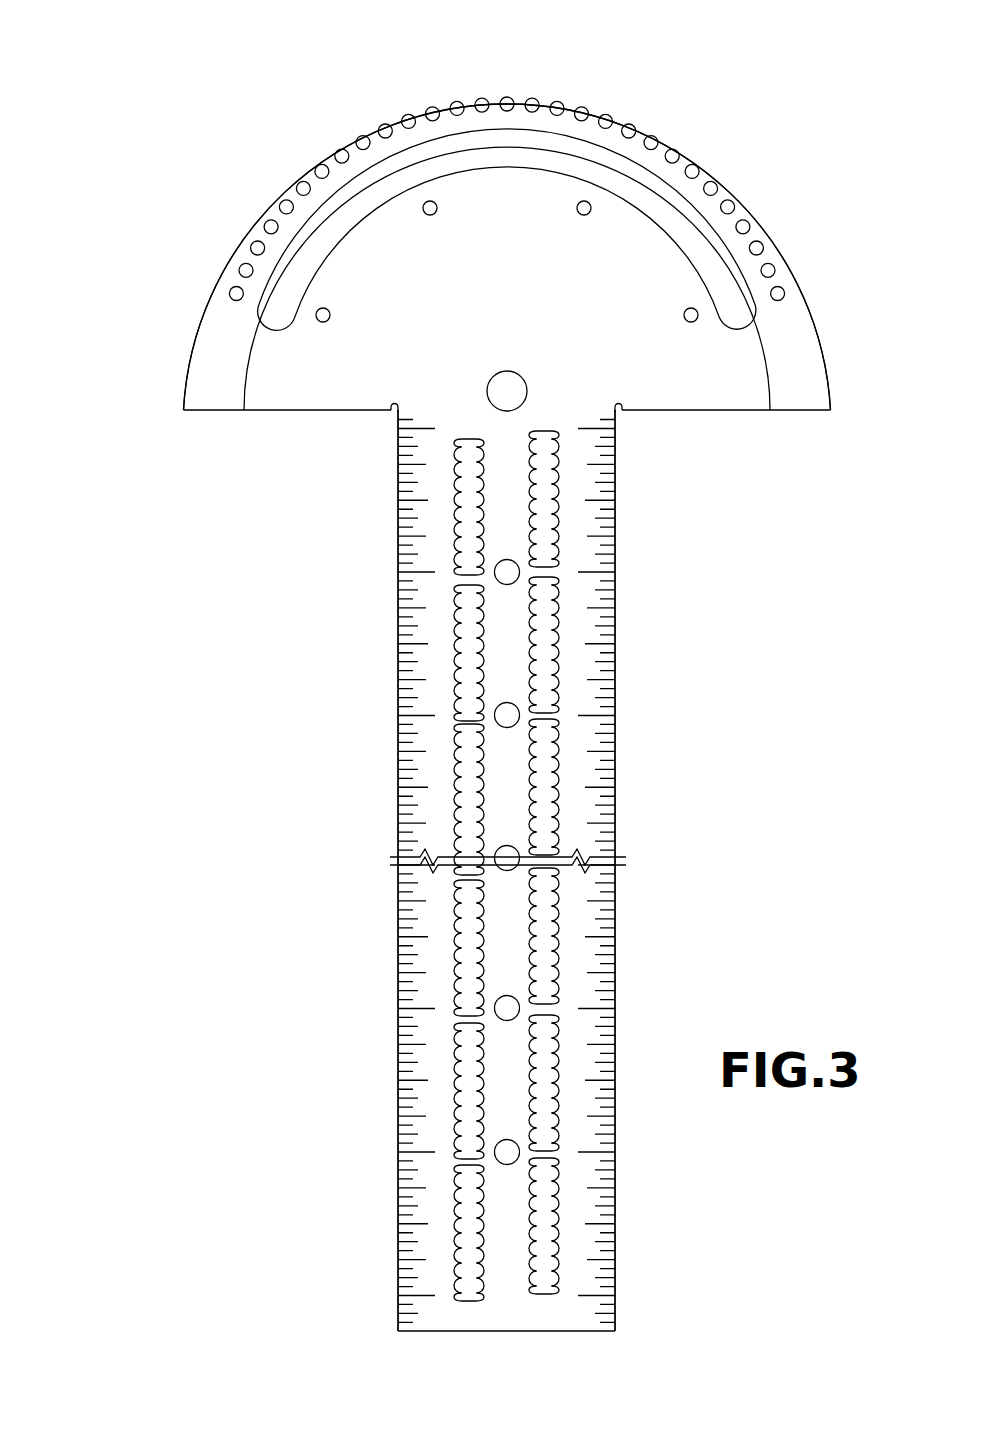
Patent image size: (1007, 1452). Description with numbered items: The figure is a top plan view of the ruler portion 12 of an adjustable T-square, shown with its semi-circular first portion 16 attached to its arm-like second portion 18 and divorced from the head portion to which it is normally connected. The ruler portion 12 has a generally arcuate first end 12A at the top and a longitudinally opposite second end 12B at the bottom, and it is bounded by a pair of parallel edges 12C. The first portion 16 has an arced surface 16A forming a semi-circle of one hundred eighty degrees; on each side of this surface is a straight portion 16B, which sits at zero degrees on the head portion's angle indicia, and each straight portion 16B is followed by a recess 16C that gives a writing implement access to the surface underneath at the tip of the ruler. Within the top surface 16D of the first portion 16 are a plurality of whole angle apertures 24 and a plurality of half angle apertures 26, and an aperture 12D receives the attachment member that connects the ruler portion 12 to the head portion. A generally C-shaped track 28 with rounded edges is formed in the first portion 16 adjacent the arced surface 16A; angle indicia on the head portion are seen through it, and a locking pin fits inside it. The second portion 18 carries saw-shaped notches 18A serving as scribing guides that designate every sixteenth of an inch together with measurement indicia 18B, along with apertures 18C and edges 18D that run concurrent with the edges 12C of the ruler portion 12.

The ruler portion 12 is at (318, 78).
The first end 12A is at (459, 60).
The second end 12B is at (575, 1344).
The edges 12C is at (378, 1142).
The aperture 12D is at (516, 383).
The first portion 16 is at (123, 60).
The arcuate edge 16A is at (607, 85).
The straight portion 16B is at (262, 412).
The recess 16C is at (393, 413).
The top surface 16D is at (640, 316).
The second portion 18 is at (300, 412).
The notches 18A is at (483, 635).
The measurement indicia 18B is at (404, 789).
The apertures 18C is at (498, 1143).
The edges 18D is at (400, 943).
The whole angle apertures 24 is at (697, 167).
The half angle apertures 26 is at (430, 215).
The track 28 is at (385, 172).